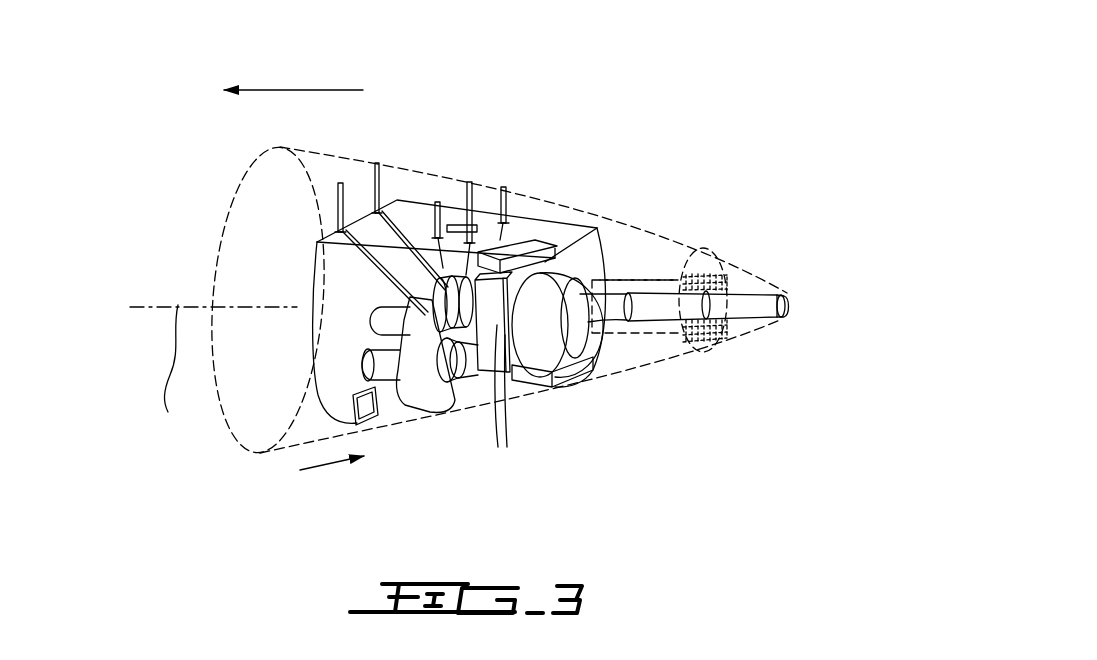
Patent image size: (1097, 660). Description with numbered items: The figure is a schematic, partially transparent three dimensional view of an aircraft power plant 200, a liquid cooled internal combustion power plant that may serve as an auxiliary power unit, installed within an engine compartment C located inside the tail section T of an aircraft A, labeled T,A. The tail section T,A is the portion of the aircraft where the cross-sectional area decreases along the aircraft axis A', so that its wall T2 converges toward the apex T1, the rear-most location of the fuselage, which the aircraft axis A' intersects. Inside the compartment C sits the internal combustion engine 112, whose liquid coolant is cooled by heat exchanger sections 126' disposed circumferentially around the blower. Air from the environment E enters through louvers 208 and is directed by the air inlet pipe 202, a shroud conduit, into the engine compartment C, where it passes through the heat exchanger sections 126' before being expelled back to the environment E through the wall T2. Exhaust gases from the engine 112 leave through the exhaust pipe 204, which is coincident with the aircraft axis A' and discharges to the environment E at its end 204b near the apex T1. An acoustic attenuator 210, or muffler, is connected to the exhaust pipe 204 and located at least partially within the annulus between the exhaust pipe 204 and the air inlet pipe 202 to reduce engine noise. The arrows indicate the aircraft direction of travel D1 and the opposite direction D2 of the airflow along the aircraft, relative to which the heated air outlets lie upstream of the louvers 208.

The internal combustion engine 112 is at (462, 276).
The heat exchanger sections 126' is at (499, 403).
The aircraft power plant 200 is at (655, 167).
The air inlet pipe 202 is at (630, 338).
The exhaust pipe 204 is at (784, 322).
The shaft end 204b is at (791, 300).
The louvers 208 is at (745, 265).
The acoustic attenuator 210 is at (654, 288).
The apex T1 is at (806, 338).
The wall T2 is at (283, 204).
The tail section, aircraft T,A is at (436, 168).
The engine compartment C is at (537, 214).
The environment E is at (889, 294).
The direction of travel D1 is at (287, 88).
The direction of airflow D2 is at (318, 468).
The aircraft axis A' is at (168, 369).